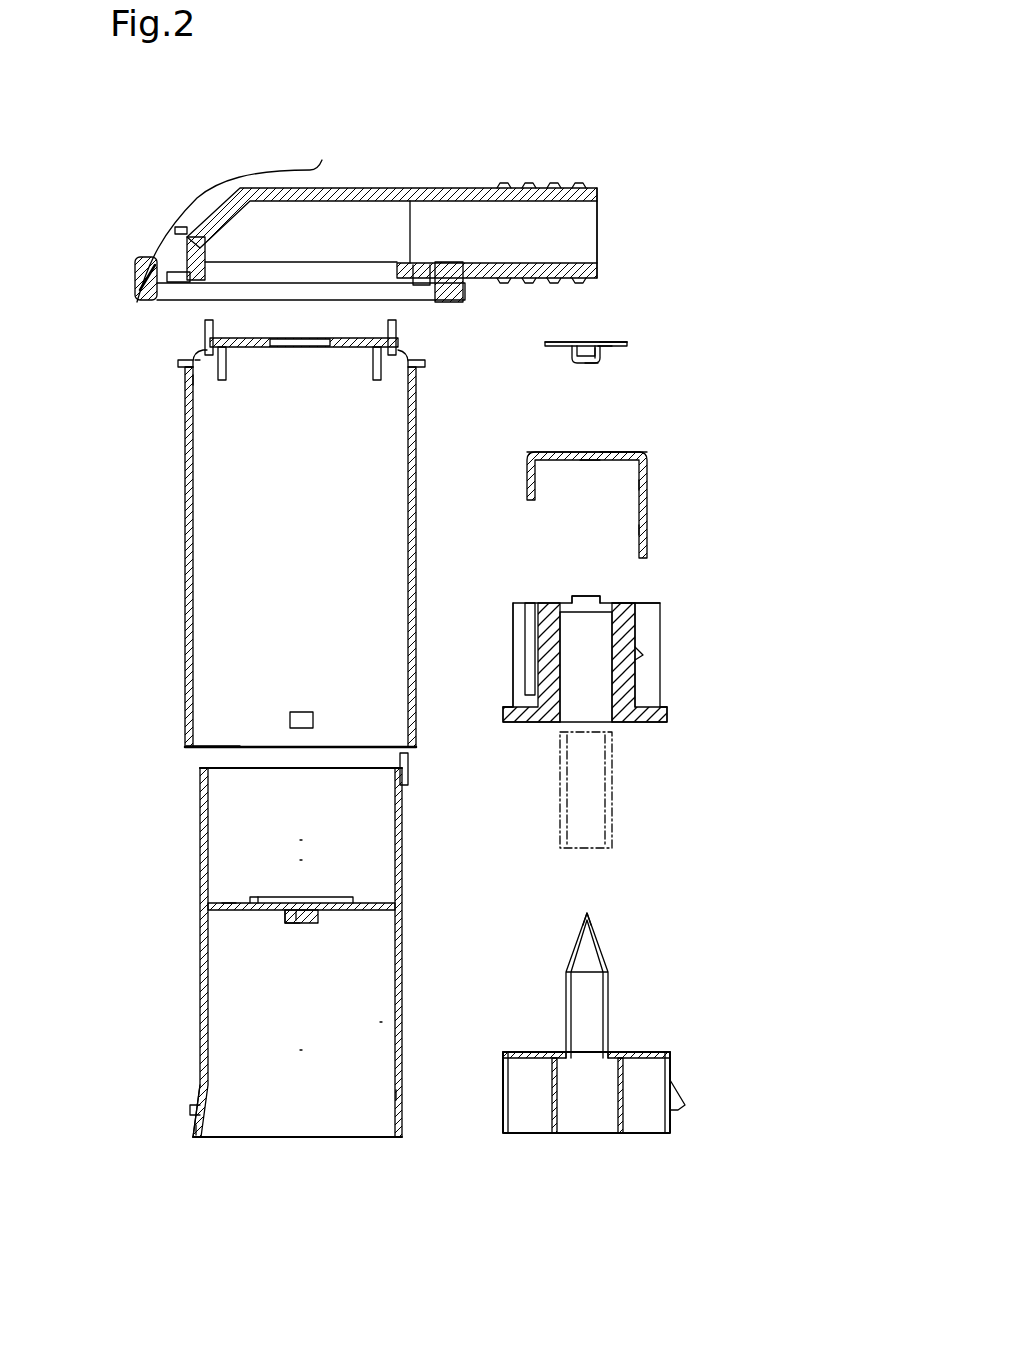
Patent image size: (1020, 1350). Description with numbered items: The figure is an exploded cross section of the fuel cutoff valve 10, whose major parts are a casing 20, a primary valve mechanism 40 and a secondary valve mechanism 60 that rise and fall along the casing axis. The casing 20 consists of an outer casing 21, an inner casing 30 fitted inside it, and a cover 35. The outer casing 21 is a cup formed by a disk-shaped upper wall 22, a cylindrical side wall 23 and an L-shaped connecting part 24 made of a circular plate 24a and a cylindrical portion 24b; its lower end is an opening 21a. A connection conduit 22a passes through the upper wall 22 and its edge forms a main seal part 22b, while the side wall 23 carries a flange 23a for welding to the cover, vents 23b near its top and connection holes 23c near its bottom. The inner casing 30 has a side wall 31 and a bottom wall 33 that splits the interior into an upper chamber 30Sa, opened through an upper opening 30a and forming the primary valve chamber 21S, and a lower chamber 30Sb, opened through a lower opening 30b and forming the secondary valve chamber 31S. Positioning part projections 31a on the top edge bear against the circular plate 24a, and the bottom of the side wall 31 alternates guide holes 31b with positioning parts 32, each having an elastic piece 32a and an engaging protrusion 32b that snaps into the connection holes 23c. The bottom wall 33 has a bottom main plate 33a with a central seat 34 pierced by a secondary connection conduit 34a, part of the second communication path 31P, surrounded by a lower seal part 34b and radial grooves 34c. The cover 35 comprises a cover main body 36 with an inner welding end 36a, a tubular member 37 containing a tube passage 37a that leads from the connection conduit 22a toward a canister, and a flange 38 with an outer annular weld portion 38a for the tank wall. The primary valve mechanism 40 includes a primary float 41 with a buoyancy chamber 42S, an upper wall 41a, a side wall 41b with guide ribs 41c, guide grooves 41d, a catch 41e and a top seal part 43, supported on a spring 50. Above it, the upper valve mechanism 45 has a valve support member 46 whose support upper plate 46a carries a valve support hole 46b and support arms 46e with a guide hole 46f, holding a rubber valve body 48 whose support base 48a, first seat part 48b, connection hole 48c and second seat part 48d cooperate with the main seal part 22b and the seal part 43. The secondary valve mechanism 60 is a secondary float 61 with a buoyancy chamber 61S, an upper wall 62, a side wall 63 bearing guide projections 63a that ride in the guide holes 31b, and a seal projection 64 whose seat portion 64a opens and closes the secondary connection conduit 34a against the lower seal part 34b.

The fuel cutoff valve 10 is at (536, 138).
The casing 20 is at (158, 171).
The outer casing 21 is at (97, 350).
The opening 21a is at (210, 745).
The primary valve chamber 21S is at (370, 863).
The upper wall 22 is at (205, 335).
The connection conduit 22a is at (300, 348).
The main seal part 22b is at (256, 348).
The side wall 23 is at (185, 520).
The flange 23a is at (418, 358).
The vents 23b is at (193, 380).
The connection holes 23c is at (186, 722).
The connecting part 24 is at (178, 365).
The circular plate 24a is at (195, 366).
The cylindrical portion 24b is at (200, 362).
The inner casing 30 is at (99, 872).
The upper opening 30a is at (210, 770).
The lower opening 30b is at (360, 1137).
The upper chamber 30Sa is at (316, 820).
The lower chamber 30Sb is at (334, 1025).
The side wall 31 is at (200, 885).
The positioning part projections 31a is at (410, 770).
The guide holes 31b is at (398, 1095).
The second communication path 31P is at (264, 946).
The secondary valve chamber 31S is at (372, 1022).
The positioning parts 32 is at (114, 1080).
The elastic piece 32a is at (195, 1128).
The engaging protrusion 32b is at (192, 1108).
The bottom wall 33 is at (205, 908).
The bottom main plate 33a is at (228, 905).
The seat 34 is at (345, 900).
The secondary connection conduit 34a is at (295, 920).
The lower seal part 34b is at (305, 922).
The grooves 34c is at (265, 900).
The cover 35 is at (465, 130).
The cover main body 36 is at (430, 268).
The inner welding end 36a is at (422, 285).
The tubular member 37 is at (480, 187).
The tube passage 37a is at (516, 240).
The flange 38 is at (251, 205).
The outer annular weld portion 38a is at (137, 300).
The primary valve mechanism 40 is at (686, 272).
The primary float 41 is at (731, 588).
The upper wall 41a is at (635, 604).
The side wall 41b is at (637, 632).
The guide ribs 41c is at (515, 665).
The guide grooves 41d is at (637, 680).
The catch 41e is at (640, 652).
The buoyancy chamber 42S is at (604, 684).
The seal part 43 is at (585, 597).
The upper valve mechanism 45 is at (788, 333).
The valve support member 46 is at (741, 445).
The support upper plate 46a is at (620, 452).
The valve support hole 46b is at (590, 460).
The support arms 46e is at (646, 485).
The guide hole 46f is at (646, 530).
The rubber valve body 48 is at (741, 280).
The support base 48a is at (605, 347).
The first seat part 48b is at (610, 343).
The connection hole 48c is at (598, 353).
The second seat part 48d is at (595, 360).
The spring 50 is at (612, 785).
The secondary valve mechanism 60 is at (745, 924).
The secondary float 61 is at (731, 965).
The buoyancy chamber 61S is at (604, 1115).
The upper wall 62 is at (650, 1050).
The side wall 63 is at (672, 1060).
The guide projections 63a is at (678, 1108).
The seal projection 64 is at (608, 990).
The seat portion 64a is at (580, 915).